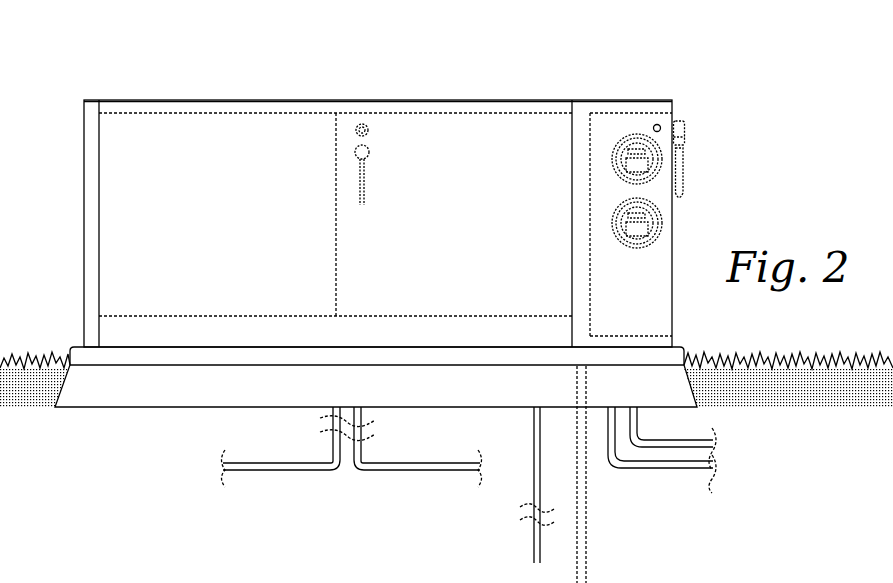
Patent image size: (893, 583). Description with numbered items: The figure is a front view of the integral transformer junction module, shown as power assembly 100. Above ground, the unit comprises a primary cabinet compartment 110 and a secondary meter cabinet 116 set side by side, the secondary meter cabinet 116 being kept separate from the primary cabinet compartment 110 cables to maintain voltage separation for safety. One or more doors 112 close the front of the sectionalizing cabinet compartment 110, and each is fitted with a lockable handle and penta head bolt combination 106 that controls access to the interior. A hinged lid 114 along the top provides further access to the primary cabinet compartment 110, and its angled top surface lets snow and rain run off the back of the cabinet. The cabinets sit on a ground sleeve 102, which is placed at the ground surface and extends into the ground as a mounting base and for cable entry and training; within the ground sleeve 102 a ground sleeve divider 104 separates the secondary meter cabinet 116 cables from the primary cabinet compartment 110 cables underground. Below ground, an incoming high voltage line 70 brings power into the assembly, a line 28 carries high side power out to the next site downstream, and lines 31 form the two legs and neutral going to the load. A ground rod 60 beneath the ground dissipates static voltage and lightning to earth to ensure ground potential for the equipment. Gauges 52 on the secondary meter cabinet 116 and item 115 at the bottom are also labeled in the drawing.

The power assembly 100 is at (692, 85).
The primary cabinet compartment 110 is at (83, 232).
The hinged lid 114 is at (140, 100).
The doors 112 is at (208, 147).
The lockable handle and penta head bolt combination 106 is at (368, 162).
The gauge 52 is at (652, 160).
The secondary meter cabinet 116 is at (640, 297).
The ground sleeve 102 is at (82, 358).
The line out 28 is at (275, 472).
The incoming line 70 is at (395, 472).
The ground rod 60 is at (537, 548).
The lines 31 is at (680, 447).
The ground sleeve divider 104 is at (588, 492).
The panel 115 is at (238, 582).